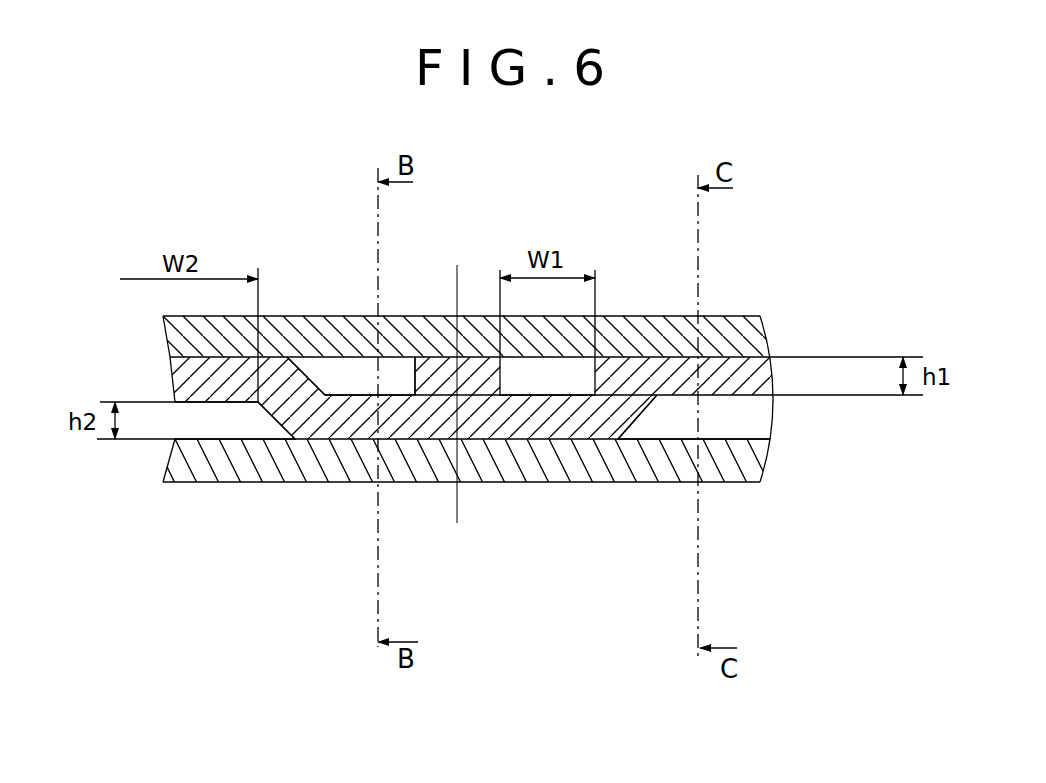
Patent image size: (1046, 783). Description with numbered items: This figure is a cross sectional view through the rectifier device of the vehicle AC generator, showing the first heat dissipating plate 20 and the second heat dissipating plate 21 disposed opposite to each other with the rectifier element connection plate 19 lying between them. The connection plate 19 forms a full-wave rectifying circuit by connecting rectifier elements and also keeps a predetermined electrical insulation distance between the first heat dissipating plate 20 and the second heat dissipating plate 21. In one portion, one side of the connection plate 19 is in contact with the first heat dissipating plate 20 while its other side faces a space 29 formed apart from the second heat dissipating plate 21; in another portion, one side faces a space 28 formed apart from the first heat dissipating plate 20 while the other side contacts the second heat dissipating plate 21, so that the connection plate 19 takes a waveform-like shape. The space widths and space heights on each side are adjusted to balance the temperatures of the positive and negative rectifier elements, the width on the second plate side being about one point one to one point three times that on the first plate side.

The rectifier element connection plate 19 is at (546, 399).
The first heat dissipating plate 20 is at (516, 320).
The second heat dissipating plate 21 is at (479, 474).
The space 28 is at (475, 307).
The space 29 is at (435, 508).